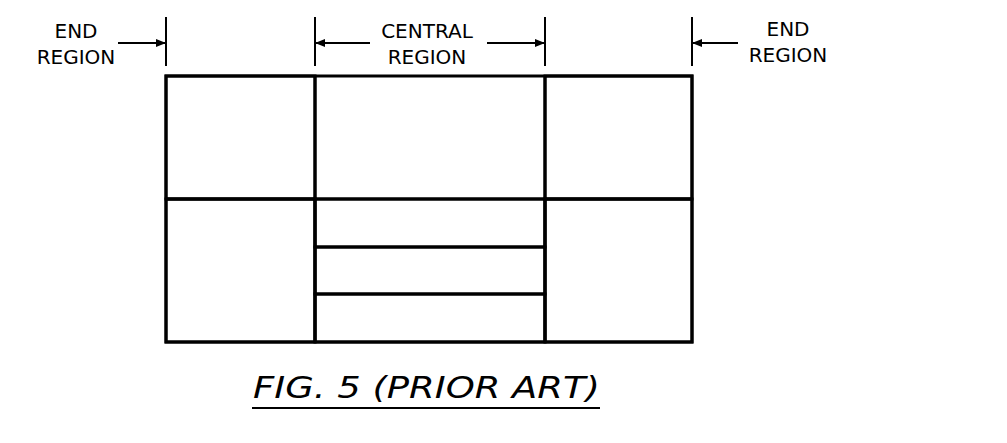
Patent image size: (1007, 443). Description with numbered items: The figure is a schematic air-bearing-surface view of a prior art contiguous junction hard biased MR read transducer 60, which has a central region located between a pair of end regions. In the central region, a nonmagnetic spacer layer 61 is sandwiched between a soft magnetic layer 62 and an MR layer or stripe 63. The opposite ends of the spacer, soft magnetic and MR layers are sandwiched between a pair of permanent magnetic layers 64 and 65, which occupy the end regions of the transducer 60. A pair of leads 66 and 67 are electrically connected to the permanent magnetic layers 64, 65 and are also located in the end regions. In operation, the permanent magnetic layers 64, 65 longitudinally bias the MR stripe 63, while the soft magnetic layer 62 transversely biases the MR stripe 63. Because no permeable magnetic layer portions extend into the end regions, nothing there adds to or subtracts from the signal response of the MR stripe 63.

The contiguous junction hard biased MR read transducer 60 is at (762, 133).
The nonmagnetic spacer layer 61 is at (338, 265).
The soft magnetic layer 62 is at (372, 310).
The MR layer 63 is at (491, 218).
The permanent magnetic layer 64 is at (680, 258).
The permanent magnetic layer 65 is at (183, 298).
The lead 66 is at (680, 108).
The left lead 67 is at (183, 156).